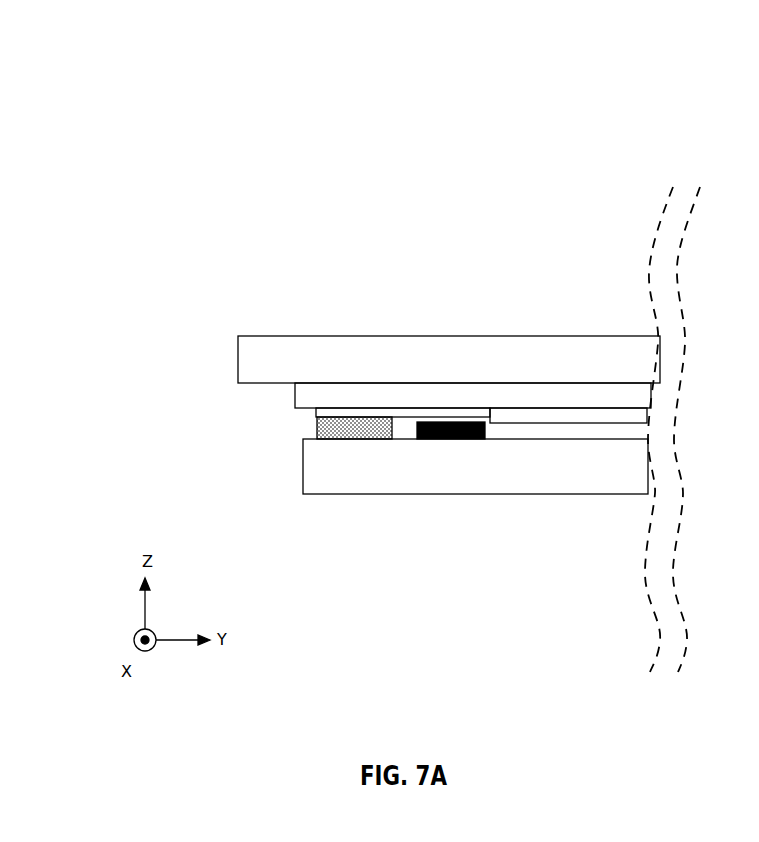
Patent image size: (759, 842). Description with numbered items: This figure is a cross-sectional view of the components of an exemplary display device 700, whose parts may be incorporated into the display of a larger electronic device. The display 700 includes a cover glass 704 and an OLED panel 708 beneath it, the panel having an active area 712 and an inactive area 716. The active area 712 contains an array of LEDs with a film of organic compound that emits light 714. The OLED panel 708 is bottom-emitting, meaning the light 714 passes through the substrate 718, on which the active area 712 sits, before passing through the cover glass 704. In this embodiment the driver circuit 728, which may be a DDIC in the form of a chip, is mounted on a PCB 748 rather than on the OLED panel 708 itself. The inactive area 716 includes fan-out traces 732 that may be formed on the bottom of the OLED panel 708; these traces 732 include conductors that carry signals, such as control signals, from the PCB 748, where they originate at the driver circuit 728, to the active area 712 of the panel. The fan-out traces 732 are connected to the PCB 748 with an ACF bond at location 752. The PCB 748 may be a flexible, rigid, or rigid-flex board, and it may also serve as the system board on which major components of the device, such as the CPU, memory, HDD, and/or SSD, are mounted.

The display device 700 is at (124, 128).
The cover glass 704 is at (291, 336).
The OLED panel 708 is at (493, 375).
The active area 712 is at (558, 418).
The light 714 is at (538, 412).
The inactive area 716 is at (360, 398).
The substrate 718 is at (596, 395).
The driver circuit 728 is at (445, 440).
The fan-out traces 732 is at (427, 410).
The PCB 748 is at (325, 494).
The ACF bond location 752 is at (317, 427).